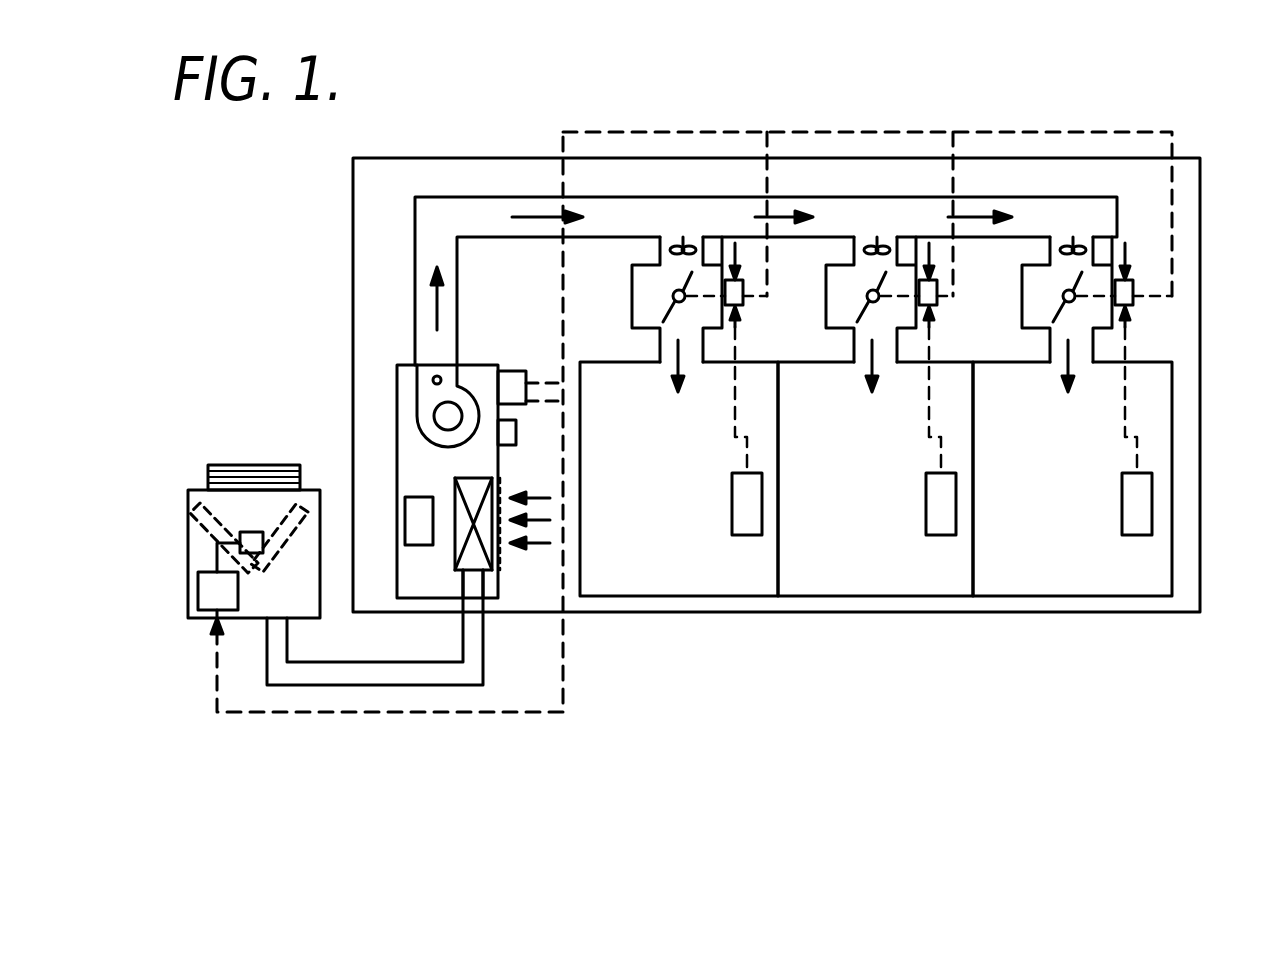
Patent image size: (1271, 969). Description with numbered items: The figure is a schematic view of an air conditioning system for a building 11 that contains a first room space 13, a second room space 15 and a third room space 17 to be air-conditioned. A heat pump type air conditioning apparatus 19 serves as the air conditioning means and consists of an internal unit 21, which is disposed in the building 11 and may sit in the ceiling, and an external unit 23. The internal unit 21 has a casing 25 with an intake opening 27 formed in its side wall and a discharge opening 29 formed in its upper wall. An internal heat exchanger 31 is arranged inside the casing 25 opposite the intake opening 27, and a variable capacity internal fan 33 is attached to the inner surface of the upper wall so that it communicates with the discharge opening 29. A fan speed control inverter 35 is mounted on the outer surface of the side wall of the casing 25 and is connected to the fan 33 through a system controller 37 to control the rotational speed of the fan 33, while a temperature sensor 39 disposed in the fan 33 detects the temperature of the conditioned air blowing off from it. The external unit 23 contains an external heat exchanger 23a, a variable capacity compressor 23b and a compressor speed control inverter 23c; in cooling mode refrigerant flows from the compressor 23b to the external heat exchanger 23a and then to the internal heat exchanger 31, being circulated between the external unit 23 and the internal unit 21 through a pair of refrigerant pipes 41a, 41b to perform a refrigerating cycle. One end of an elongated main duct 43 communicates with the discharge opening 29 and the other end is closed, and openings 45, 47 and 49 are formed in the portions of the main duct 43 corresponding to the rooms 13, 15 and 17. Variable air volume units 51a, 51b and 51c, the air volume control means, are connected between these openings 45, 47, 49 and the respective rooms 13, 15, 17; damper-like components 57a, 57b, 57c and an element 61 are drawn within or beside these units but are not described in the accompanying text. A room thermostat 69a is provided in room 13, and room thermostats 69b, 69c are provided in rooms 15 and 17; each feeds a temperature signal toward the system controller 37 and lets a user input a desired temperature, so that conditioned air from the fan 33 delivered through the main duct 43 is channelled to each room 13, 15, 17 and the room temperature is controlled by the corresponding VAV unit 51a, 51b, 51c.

The building 11 is at (713, 140).
The first room space 13 is at (648, 578).
The second room space 15 is at (863, 573).
The third room space 17 is at (1057, 573).
The heat pump type air conditioning apparatus 19 is at (360, 700).
The internal unit 21 is at (383, 444).
The external unit 23 is at (176, 554).
The external heat exchanger 23a is at (196, 500).
The variable capacity compressor 23b is at (198, 590).
The compressor speed control inverter 23c is at (252, 532).
The casing 25 is at (395, 578).
The intake opening 27 is at (500, 562).
The discharge opening 29 is at (432, 378).
The internal heat exchanger 31 is at (475, 478).
The variable capacity internal fan 33 is at (417, 418).
The fan speed control inverter 35 is at (516, 432).
The system controller 37 is at (510, 371).
The temperature sensor 39 is at (442, 368).
The refrigerant pipe 41a is at (307, 685).
The refrigerant pipe 41b is at (443, 685).
The main duct 43 is at (470, 197).
The opening 45 is at (667, 240).
The opening 47 is at (866, 240).
The opening 49 is at (1057, 233).
The variable air volume unit 51a is at (722, 240).
The variable air volume unit 51b is at (905, 262).
The variable air volume unit 51c is at (1108, 258).
The first damper 57a is at (668, 310).
The second damper 57b is at (862, 310).
The third damper 57c is at (1060, 310).
The fan 61 is at (670, 252).
The room thermostat 69a is at (749, 535).
The room thermostat 69b is at (943, 535).
The room thermostat 69c is at (1139, 535).